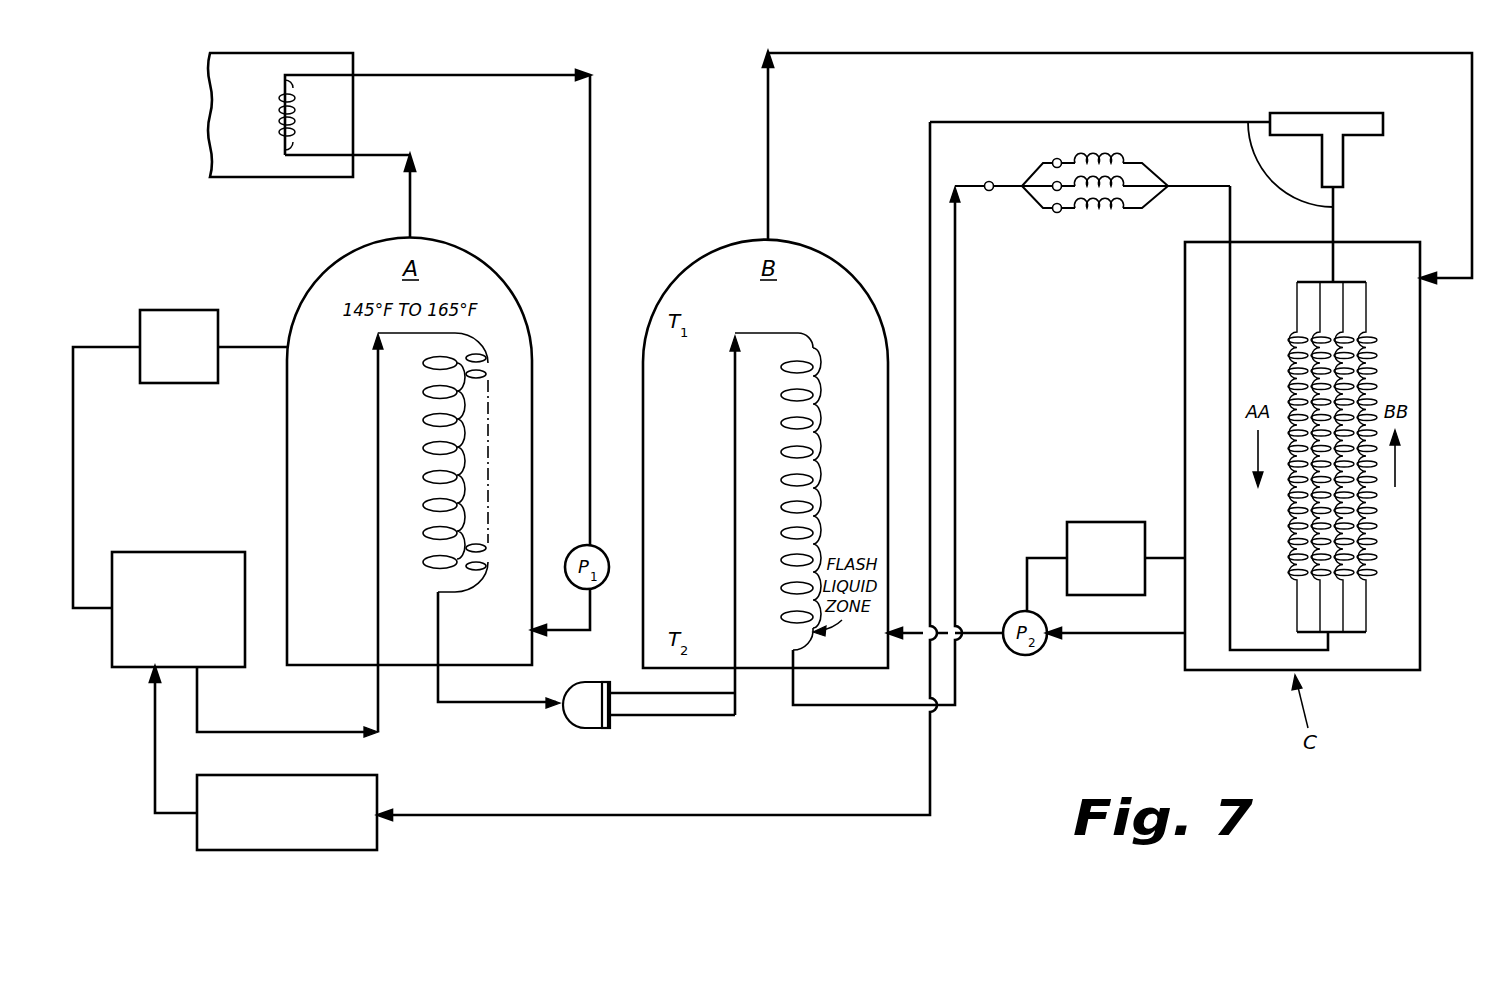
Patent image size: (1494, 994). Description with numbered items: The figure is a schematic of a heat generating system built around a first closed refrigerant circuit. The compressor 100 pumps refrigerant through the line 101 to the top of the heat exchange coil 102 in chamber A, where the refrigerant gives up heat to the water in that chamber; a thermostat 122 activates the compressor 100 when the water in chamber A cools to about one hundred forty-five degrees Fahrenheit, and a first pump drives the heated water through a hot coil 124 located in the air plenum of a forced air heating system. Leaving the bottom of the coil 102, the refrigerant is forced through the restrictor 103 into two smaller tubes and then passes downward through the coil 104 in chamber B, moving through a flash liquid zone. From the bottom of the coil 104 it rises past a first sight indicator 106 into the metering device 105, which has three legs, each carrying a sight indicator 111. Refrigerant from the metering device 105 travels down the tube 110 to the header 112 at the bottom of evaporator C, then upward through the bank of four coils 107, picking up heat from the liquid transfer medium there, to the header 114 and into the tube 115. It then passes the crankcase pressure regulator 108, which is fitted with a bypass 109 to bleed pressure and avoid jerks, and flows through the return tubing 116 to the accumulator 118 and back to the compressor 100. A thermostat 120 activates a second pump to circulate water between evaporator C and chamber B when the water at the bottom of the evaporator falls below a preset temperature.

The compressor 100 is at (180, 543).
The line 101 is at (300, 738).
The heat exchange coil 102 is at (458, 437).
The restrictor 103 is at (604, 728).
The coil 104 is at (813, 445).
The metering device 105 is at (1157, 168).
The first sight indicator 106 is at (990, 191).
The evaporator coils 107 is at (1385, 361).
The crankcase pressure regulator 108 is at (1343, 158).
The bypass 109 is at (1282, 188).
The tube 110 is at (1235, 393).
The sight indicator 111 is at (1052, 162).
The header 112 is at (1343, 633).
The header 114 is at (1313, 282).
The tube 115 is at (1333, 223).
The return tubing 116 is at (1042, 122).
The accumulator 118 is at (343, 850).
The thermostat 120 is at (1107, 522).
The thermostat 122 is at (220, 323).
The hot coil 124 is at (293, 108).